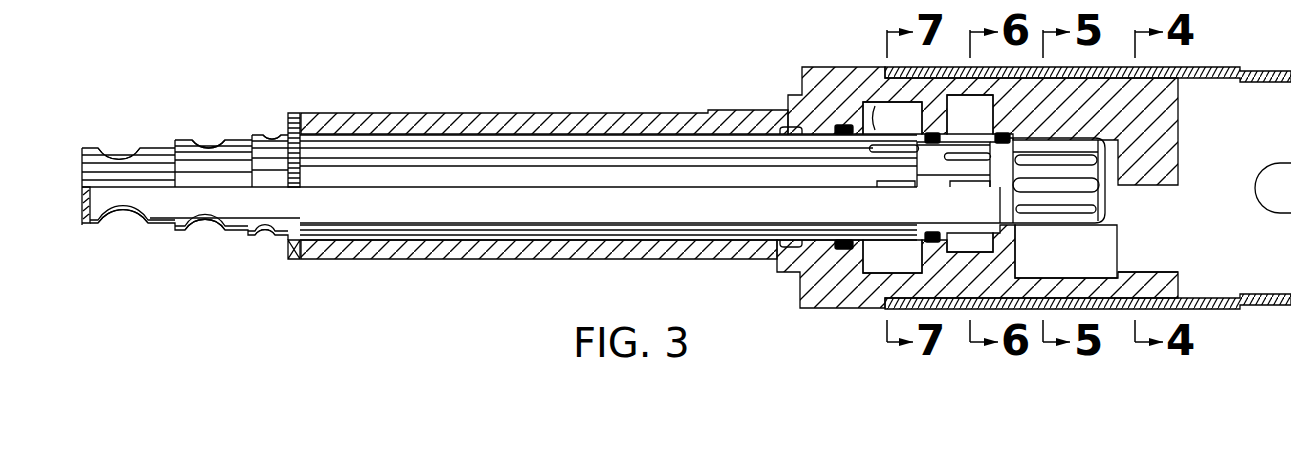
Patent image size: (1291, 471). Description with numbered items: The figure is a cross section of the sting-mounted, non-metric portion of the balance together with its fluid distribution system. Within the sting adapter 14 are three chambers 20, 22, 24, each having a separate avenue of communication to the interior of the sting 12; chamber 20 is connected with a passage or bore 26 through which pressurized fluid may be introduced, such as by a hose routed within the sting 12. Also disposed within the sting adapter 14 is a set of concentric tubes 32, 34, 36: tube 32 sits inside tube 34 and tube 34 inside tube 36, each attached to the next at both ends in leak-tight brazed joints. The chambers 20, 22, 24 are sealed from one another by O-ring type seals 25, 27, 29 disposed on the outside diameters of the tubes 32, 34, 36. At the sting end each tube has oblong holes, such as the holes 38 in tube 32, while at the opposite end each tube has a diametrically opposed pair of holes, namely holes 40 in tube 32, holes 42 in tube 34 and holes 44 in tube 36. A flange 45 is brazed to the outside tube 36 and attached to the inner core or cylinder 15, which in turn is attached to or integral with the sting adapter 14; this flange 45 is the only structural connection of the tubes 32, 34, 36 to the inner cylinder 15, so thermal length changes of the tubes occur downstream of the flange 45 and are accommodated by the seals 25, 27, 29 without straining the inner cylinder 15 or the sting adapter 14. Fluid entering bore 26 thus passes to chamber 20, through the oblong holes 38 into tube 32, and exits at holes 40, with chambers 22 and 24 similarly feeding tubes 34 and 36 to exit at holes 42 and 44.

The sting 12 is at (1262, 67).
The sting adapter 14 is at (803, 66).
The inner core or cylinder 15 is at (575, 112).
The chamber 20 is at (1043, 262).
The chamber 22 is at (970, 245).
The chamber 24 is at (883, 268).
The seal 25 is at (1005, 134).
The passage or bore 26 is at (1170, 272).
The seal 27 is at (930, 132).
The seal 29 is at (840, 127).
The tube 32 is at (84, 148).
The tube 34 is at (177, 140).
The tube 36 is at (253, 135).
The oblong holes 38 is at (1063, 215).
The holes 40 is at (118, 160).
The holes 42 is at (210, 146).
The holes 44 is at (271, 136).
The flange 45 is at (293, 114).